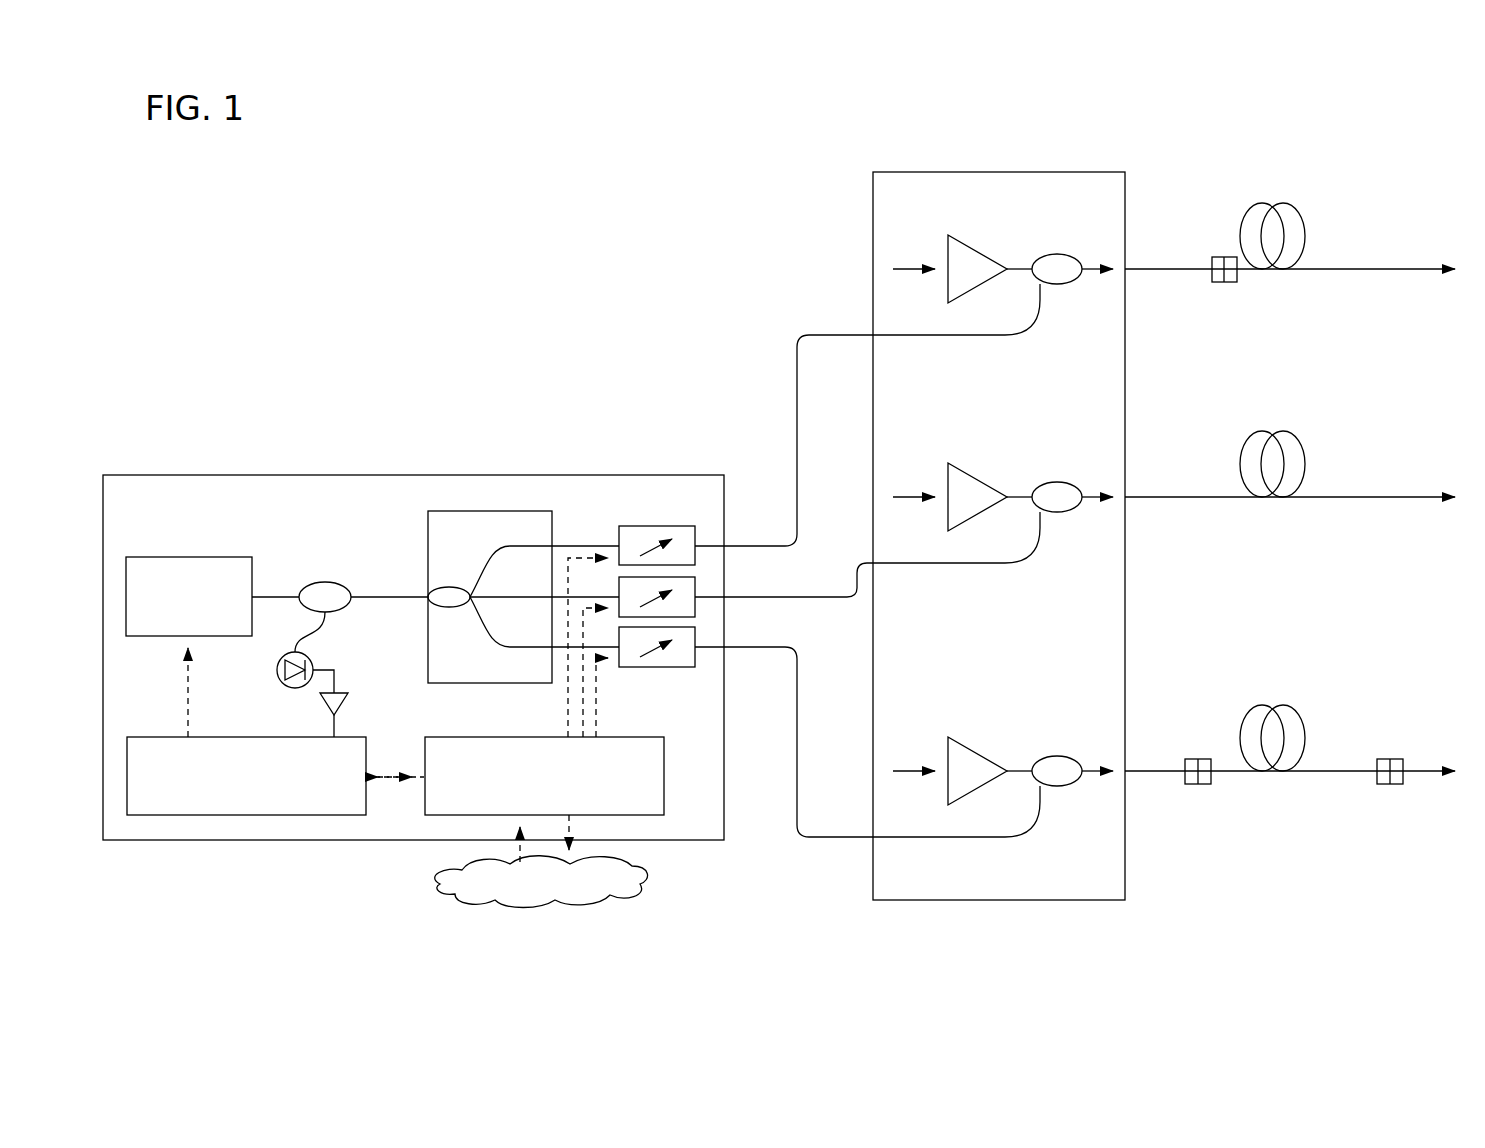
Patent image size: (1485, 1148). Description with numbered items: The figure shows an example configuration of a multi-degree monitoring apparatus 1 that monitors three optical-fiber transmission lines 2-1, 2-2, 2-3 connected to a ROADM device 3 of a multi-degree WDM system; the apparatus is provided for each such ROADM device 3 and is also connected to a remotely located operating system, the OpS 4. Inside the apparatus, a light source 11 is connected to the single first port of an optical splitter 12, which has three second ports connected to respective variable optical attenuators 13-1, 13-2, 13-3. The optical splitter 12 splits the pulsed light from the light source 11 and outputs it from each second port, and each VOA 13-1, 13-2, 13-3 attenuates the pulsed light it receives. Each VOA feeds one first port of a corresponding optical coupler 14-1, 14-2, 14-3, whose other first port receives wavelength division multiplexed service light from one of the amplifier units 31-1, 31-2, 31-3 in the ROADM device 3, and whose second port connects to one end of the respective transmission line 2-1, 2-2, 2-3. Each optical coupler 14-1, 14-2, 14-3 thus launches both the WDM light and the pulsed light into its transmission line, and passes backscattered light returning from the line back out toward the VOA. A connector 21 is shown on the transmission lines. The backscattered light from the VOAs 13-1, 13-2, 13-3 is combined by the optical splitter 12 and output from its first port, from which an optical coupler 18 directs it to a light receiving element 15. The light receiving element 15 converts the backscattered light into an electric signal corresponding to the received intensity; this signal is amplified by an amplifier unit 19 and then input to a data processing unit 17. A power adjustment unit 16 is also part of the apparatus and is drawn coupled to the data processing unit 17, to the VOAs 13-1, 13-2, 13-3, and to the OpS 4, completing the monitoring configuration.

The multi-degree monitoring apparatus 1 is at (270, 350).
The light source 11 is at (215, 557).
The optical splitter 12 is at (552, 515).
The variable optical attenuator 13-1 is at (695, 529).
The variable optical attenuator 13-2 is at (695, 581).
The variable optical attenuator 13-3 is at (695, 633).
The optical coupler 14-1 is at (1072, 284).
The optical coupler 14-2 is at (1072, 512).
The optical coupler 14-3 is at (1066, 757).
The light receiving element 15 is at (277, 670).
The power adjustment unit 16 is at (625, 737).
The data processing unit 17 is at (358, 737).
The optical coupler 18 is at (342, 585).
The amplifier unit 19 is at (345, 693).
The transmission line 2-1 is at (1296, 208).
The transmission line 2-2 is at (1296, 435).
The transmission line 2-3 is at (1296, 710).
The connector 21 is at (1222, 282).
The ROADM device 3 is at (873, 200).
The amplifier unit 31-1 is at (976, 252).
The amplifier unit 31-2 is at (976, 480).
The amplifier unit 31-3 is at (976, 754).
The operating system (OpS) 4 is at (648, 874).